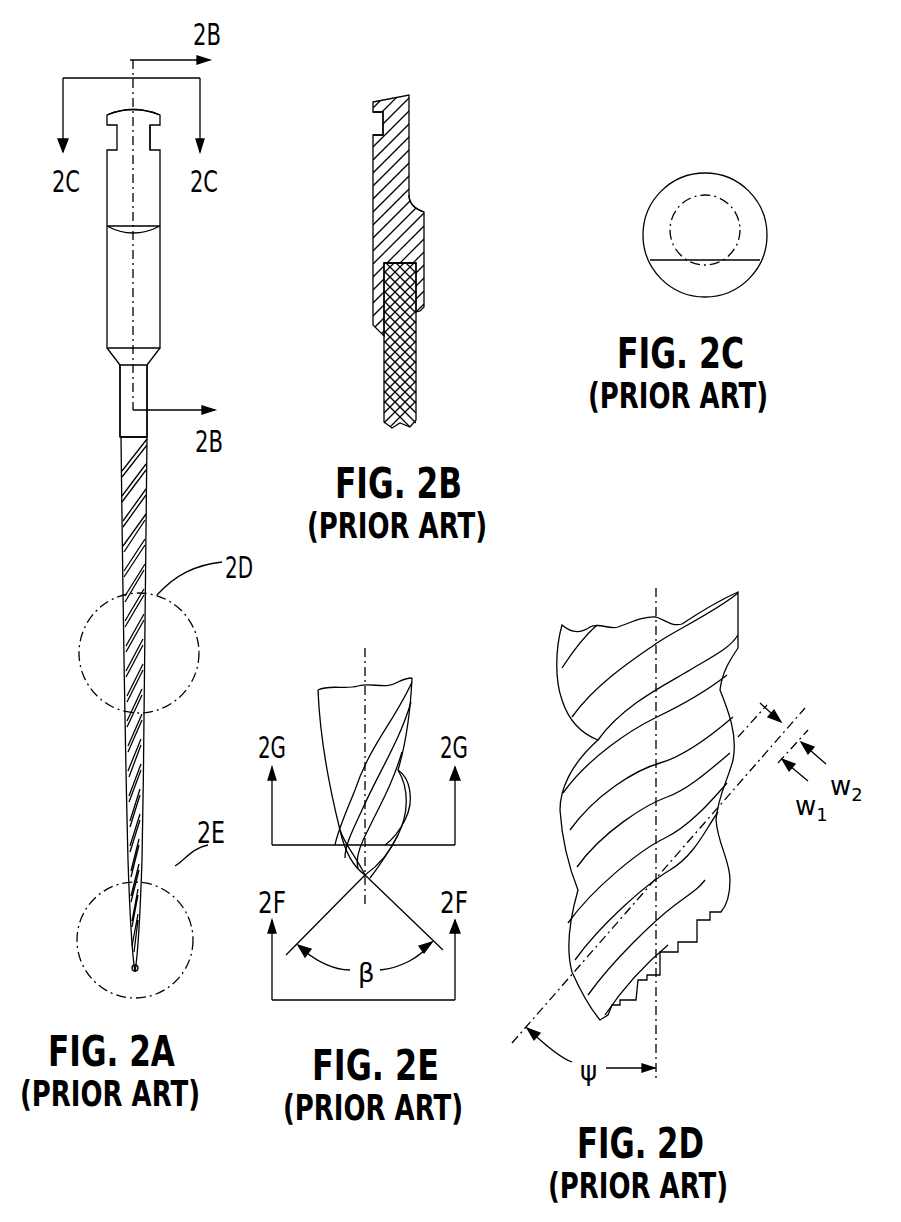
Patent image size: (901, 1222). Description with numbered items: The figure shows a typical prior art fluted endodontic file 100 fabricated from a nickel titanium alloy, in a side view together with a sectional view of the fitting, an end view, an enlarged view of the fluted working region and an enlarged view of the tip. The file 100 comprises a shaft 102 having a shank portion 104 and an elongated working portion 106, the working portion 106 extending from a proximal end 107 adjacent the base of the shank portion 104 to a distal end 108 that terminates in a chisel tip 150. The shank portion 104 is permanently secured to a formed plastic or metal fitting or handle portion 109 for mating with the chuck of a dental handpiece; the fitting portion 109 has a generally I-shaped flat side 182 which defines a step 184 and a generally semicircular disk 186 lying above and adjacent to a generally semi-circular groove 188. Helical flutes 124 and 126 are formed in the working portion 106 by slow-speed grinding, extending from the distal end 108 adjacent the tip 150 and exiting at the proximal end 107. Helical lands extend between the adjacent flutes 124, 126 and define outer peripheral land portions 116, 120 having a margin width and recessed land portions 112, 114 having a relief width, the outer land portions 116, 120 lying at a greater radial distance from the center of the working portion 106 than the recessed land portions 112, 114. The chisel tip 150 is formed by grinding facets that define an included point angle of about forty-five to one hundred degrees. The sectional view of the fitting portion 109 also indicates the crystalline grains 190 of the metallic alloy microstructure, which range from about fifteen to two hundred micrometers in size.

In FIG. 2A, the file 100 is at (203, 340).
In FIG. 2B, the shaft 102 is at (405, 258).
In FIG. 2A, the shank portion 104 is at (147, 395).
In FIG. 2A, the working portion 106 is at (150, 545).
In FIG. 2A, the proximal end 107 is at (167, 477).
In FIG. 2A, the distal end 108 is at (128, 903).
In FIG. 2E, the distal end 108 is at (320, 731).
In FIG. 2A, the fitting or handle portion 109 is at (160, 212).
In FIG. 2D, the recessed land portion 112 is at (572, 968).
In FIG. 2D, the recessed land portion 114 is at (728, 683).
In FIG. 2D, the outer peripheral land portion 116 is at (742, 622).
In FIG. 2D, the outer peripheral land portion 120 is at (568, 932).
In FIG. 2D, the helical flute 124 is at (720, 872).
In FIG. 2D, the helical flute 126 is at (746, 724).
In FIG. 2E, the chisel tip 150 is at (383, 872).
In FIG. 2A, the I-shaped flat side 182 is at (150, 190).
In FIG. 2B, the I-shaped flat side 182 is at (410, 146).
In FIG. 2B, the step 184 is at (421, 207).
In FIG. 2A, the semicircular disk 186 is at (122, 112).
In FIG. 2C, the semicircular disk 186 is at (677, 183).
In FIG. 2A, the semi-circular groove 188 is at (165, 134).
In FIG. 2B, the semi-circular groove 188 is at (379, 120).
In FIG. 2C, the semi-circular groove 188 is at (733, 196).
In FIG. 2B, the grains 190 is at (392, 372).